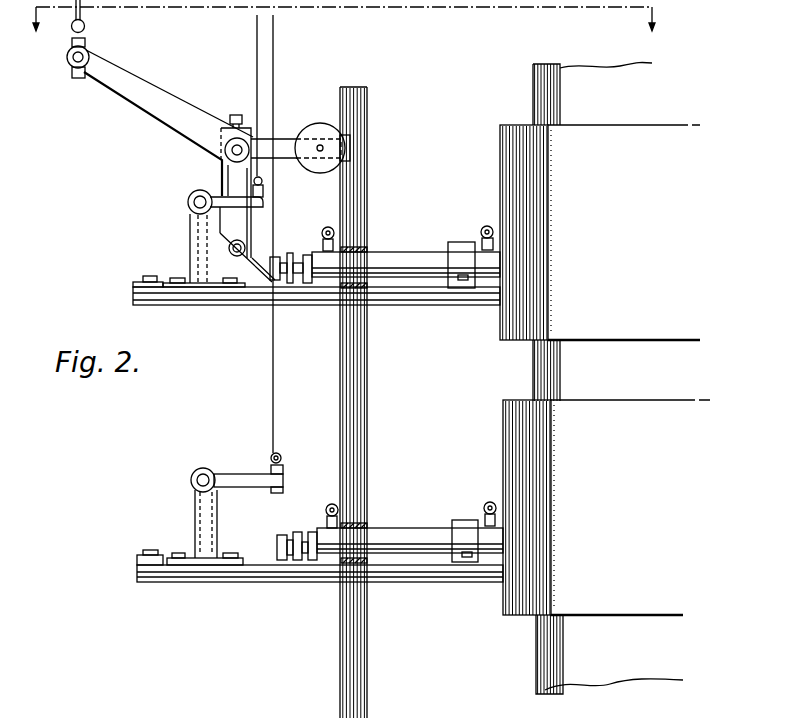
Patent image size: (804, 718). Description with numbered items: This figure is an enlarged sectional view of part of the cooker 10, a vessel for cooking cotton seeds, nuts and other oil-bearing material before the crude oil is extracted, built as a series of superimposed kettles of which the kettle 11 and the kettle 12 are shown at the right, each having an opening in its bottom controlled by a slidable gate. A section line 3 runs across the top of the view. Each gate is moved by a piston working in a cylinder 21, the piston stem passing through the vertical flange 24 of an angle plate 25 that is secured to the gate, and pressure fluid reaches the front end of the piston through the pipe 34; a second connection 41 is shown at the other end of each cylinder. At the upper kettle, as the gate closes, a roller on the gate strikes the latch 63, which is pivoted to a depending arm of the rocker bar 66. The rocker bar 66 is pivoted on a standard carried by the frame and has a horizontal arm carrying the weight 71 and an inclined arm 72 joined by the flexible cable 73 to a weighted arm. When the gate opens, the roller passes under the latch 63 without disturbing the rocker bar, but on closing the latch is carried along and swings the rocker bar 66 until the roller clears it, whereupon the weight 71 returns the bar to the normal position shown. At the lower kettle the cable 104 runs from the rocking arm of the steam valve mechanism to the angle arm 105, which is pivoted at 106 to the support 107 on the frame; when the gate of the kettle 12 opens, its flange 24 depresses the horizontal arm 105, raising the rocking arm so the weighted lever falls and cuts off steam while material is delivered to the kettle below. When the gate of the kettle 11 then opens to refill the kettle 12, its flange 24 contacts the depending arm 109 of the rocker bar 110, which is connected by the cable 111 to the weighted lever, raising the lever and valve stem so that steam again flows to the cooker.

The section line 3- 3 is at (343, 31).
The cooker 10 is at (555, 72).
The kettle 11 is at (512, 138).
The kettle 12 is at (521, 423).
The cylinder 21 is at (404, 250).
The vertical flange 24 is at (291, 535).
The angle plate 25 is at (302, 288).
The pipe 34 is at (329, 227).
The fitting 41 is at (488, 226).
The latch 63 is at (190, 266).
The rocker bar 66 is at (197, 122).
The weight 71 is at (313, 127).
The inclined arm 72 is at (121, 82).
The flexible member or cable 73 is at (74, 12).
The cable 104 is at (272, 378).
The angle arm 105 is at (228, 474).
The pivot 106 is at (191, 481).
The support 107 is at (218, 542).
The depending arm 109 is at (190, 220).
The rocker bar 110 is at (232, 195).
The cable 111 is at (256, 47).